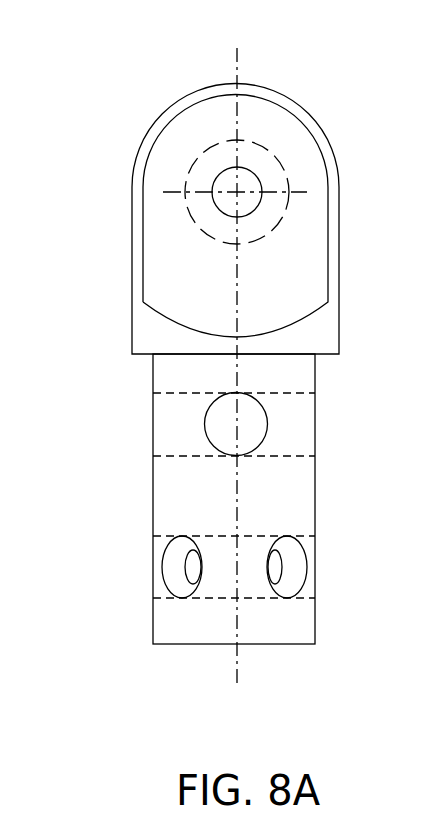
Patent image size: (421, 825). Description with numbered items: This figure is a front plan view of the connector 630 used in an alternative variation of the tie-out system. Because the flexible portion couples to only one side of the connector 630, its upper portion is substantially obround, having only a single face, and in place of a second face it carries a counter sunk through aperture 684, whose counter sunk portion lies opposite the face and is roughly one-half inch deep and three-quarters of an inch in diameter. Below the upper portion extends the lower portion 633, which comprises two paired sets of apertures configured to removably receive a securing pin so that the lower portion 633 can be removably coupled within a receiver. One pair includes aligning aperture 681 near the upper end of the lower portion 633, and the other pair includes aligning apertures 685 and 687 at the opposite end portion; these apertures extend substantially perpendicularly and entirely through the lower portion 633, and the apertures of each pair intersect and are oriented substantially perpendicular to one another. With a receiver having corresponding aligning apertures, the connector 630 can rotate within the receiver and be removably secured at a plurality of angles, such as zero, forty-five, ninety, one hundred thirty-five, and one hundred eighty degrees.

The connector 630 is at (78, 148).
The lower portion 633 is at (296, 477).
The aligning aperture 681 is at (255, 408).
The counter sunk through aperture 684 is at (246, 178).
The aligning aperture 685 is at (170, 568).
The aligning aperture 687 is at (300, 568).